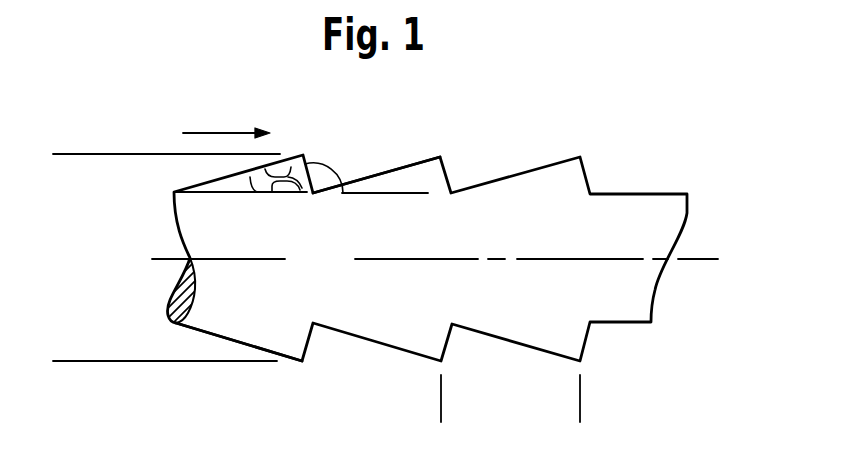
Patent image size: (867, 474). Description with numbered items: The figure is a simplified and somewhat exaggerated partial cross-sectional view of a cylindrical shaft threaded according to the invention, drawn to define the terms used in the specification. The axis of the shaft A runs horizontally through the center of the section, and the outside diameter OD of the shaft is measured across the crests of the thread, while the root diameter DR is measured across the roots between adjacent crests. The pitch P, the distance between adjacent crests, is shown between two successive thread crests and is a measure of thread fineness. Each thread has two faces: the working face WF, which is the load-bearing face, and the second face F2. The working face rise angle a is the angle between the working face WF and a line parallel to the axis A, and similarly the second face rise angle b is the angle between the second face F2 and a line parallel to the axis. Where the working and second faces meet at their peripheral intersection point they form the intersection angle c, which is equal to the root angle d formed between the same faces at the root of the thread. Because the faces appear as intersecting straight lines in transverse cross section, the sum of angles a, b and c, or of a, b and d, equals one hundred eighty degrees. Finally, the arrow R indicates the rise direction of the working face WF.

The rise direction R is at (222, 132).
The intersection angle c is at (268, 166).
The root angle d is at (330, 163).
The second face F2 is at (448, 160).
The working face rise angle a is at (263, 193).
The second face rise angle b is at (275, 193).
The root diameter DR is at (313, 205).
The outside diameter OD is at (63, 166).
The axis of the shaft A is at (437, 257).
The working face WF is at (232, 339).
The pitch P is at (568, 398).